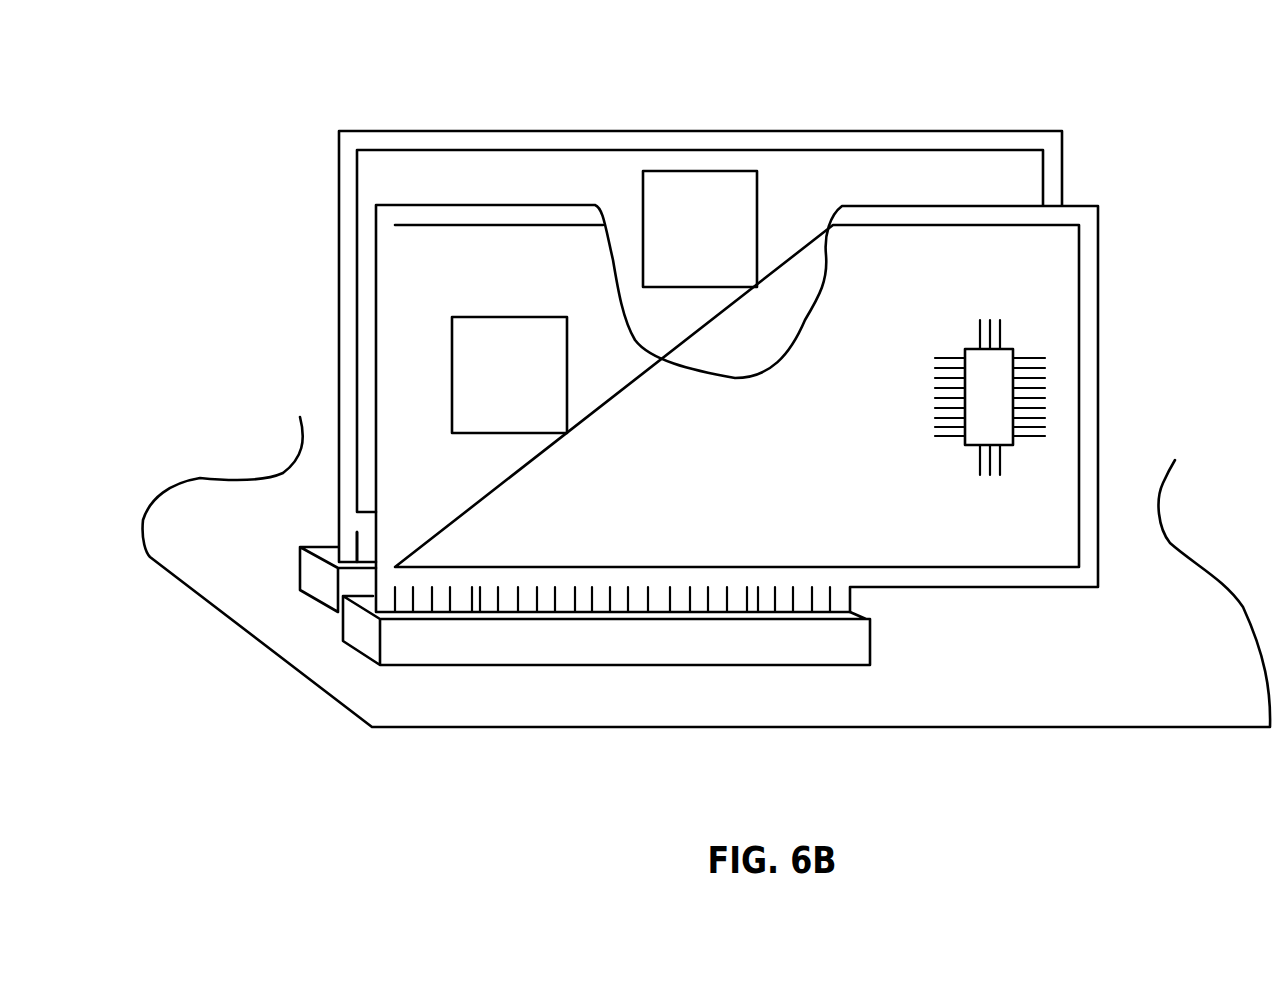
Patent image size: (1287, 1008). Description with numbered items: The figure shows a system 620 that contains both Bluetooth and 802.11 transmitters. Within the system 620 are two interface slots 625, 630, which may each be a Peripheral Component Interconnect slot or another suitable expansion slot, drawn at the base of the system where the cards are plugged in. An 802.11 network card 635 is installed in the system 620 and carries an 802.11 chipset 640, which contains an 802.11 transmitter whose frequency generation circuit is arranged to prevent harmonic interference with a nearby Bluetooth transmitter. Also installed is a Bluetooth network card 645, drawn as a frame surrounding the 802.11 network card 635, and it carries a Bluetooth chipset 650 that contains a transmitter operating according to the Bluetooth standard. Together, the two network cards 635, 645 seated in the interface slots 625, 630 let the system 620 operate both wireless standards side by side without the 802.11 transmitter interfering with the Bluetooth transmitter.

The system 620 is at (990, 728).
The interface slot 625 is at (357, 627).
The interface slot 630 is at (318, 579).
The 802.11 network card 635 is at (1100, 321).
The 802.11 chipset 640 is at (452, 395).
The Bluetooth network card 645 is at (1063, 152).
The Bluetooth chipset 650 is at (688, 170).